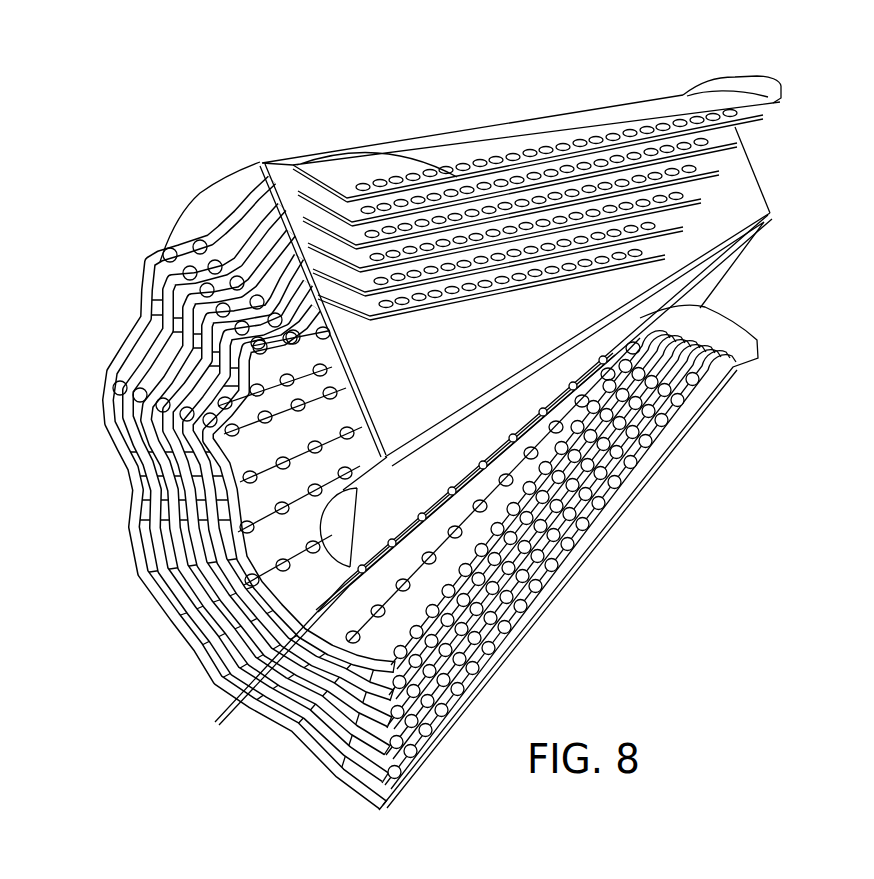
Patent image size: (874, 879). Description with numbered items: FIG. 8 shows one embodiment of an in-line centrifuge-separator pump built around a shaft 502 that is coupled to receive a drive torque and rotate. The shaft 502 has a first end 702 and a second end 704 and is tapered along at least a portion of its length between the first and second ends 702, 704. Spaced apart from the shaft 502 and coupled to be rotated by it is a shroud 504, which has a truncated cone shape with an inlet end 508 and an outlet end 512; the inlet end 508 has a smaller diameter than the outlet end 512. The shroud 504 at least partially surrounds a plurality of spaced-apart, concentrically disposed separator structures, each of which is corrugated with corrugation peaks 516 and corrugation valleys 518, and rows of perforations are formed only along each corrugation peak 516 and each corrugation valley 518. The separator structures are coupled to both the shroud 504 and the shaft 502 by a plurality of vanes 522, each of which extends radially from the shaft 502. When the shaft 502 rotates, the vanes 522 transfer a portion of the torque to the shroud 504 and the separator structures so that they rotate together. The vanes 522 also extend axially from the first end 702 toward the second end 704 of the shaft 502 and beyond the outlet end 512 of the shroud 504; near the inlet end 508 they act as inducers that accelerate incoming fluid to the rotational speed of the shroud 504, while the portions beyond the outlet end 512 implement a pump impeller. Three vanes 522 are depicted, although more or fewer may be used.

The shaft 502 is at (422, 503).
The shroud 504 is at (463, 147).
The inlet end 508 is at (783, 92).
The outlet end 512 is at (200, 207).
The corrugation peaks 516 is at (100, 394).
The corrugation valleys 518 is at (122, 483).
The vanes 522 is at (483, 360).
The first end 702 is at (772, 216).
The second end 704 is at (330, 527).